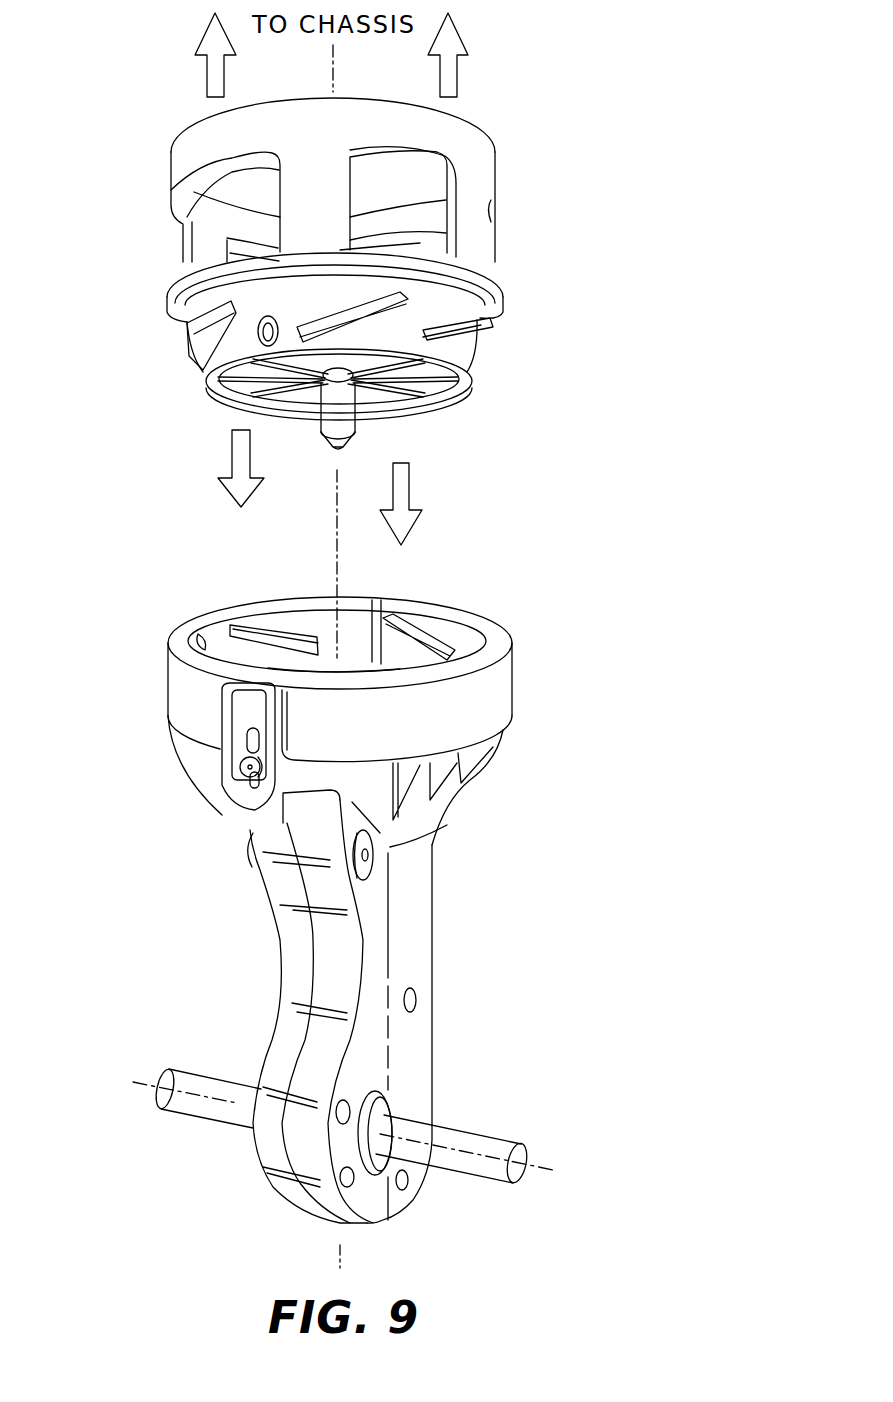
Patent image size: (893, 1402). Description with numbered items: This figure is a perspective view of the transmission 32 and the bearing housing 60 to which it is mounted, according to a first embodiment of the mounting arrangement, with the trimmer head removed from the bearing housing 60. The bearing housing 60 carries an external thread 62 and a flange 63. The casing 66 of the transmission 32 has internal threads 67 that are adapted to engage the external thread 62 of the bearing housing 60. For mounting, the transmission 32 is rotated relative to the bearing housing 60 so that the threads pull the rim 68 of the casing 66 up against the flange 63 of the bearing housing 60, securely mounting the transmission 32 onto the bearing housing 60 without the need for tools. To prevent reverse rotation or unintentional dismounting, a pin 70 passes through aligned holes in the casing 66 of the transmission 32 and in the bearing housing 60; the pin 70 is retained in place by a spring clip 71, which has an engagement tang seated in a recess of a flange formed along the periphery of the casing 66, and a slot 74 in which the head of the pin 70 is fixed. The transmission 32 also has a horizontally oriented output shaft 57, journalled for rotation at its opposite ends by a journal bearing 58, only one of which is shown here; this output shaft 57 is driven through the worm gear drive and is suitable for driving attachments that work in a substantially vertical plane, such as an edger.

The bearing housing 60 is at (210, 150).
The external thread 62 is at (174, 362).
The flange 63 is at (505, 300).
The casing 66 is at (508, 688).
The internal threads 67 is at (277, 624).
The rim 68 is at (490, 628).
The pin 70 is at (243, 770).
The spring clip 71 is at (245, 708).
The slot 74 is at (247, 742).
The transmission 32 is at (480, 803).
The output shaft 57 is at (497, 1140).
The journal bearing 58 is at (381, 1097).